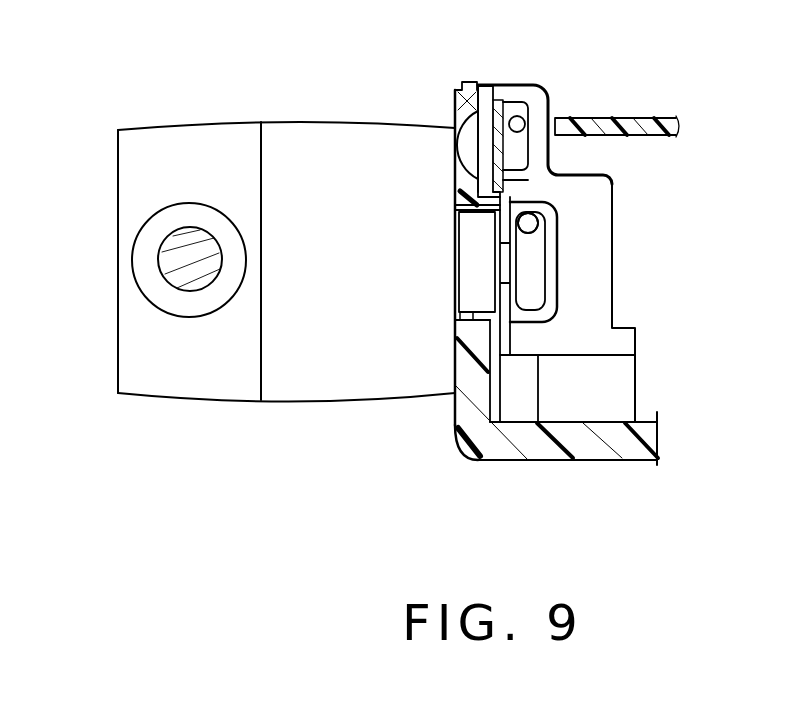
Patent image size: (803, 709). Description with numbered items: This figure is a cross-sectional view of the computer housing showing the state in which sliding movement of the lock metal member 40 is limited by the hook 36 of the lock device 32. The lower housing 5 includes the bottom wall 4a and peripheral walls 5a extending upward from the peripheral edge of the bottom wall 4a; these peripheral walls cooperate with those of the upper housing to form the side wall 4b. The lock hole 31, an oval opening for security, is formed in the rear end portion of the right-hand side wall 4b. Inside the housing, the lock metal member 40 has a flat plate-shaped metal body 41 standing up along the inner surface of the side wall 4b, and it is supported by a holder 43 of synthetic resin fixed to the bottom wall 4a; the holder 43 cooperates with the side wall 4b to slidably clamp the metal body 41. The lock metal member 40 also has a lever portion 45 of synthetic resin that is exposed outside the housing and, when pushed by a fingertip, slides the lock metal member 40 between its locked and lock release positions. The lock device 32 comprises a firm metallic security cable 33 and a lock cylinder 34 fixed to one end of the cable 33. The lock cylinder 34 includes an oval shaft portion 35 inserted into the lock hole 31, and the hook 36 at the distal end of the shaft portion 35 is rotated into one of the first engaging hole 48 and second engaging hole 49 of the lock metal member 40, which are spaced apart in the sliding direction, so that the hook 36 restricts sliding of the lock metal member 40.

The lock device 32 is at (112, 398).
The security cable 33 is at (170, 257).
The lock cylinder 34 is at (300, 138).
The shaft portion 35 is at (477, 272).
The lock hole 31 is at (465, 306).
The hook 36 is at (532, 288).
The lock metal member 40 is at (530, 178).
The metal body 41 is at (502, 102).
The holder 43 is at (593, 242).
The lever portion 45 is at (467, 160).
The first engaging hole 48 is at (537, 230).
The second engaging hole 49 is at (528, 223).
The bottom wall 4a is at (632, 445).
The side wall 4b is at (455, 338).
The lower housing 5 is at (472, 453).
The peripheral wall 5a is at (455, 186).